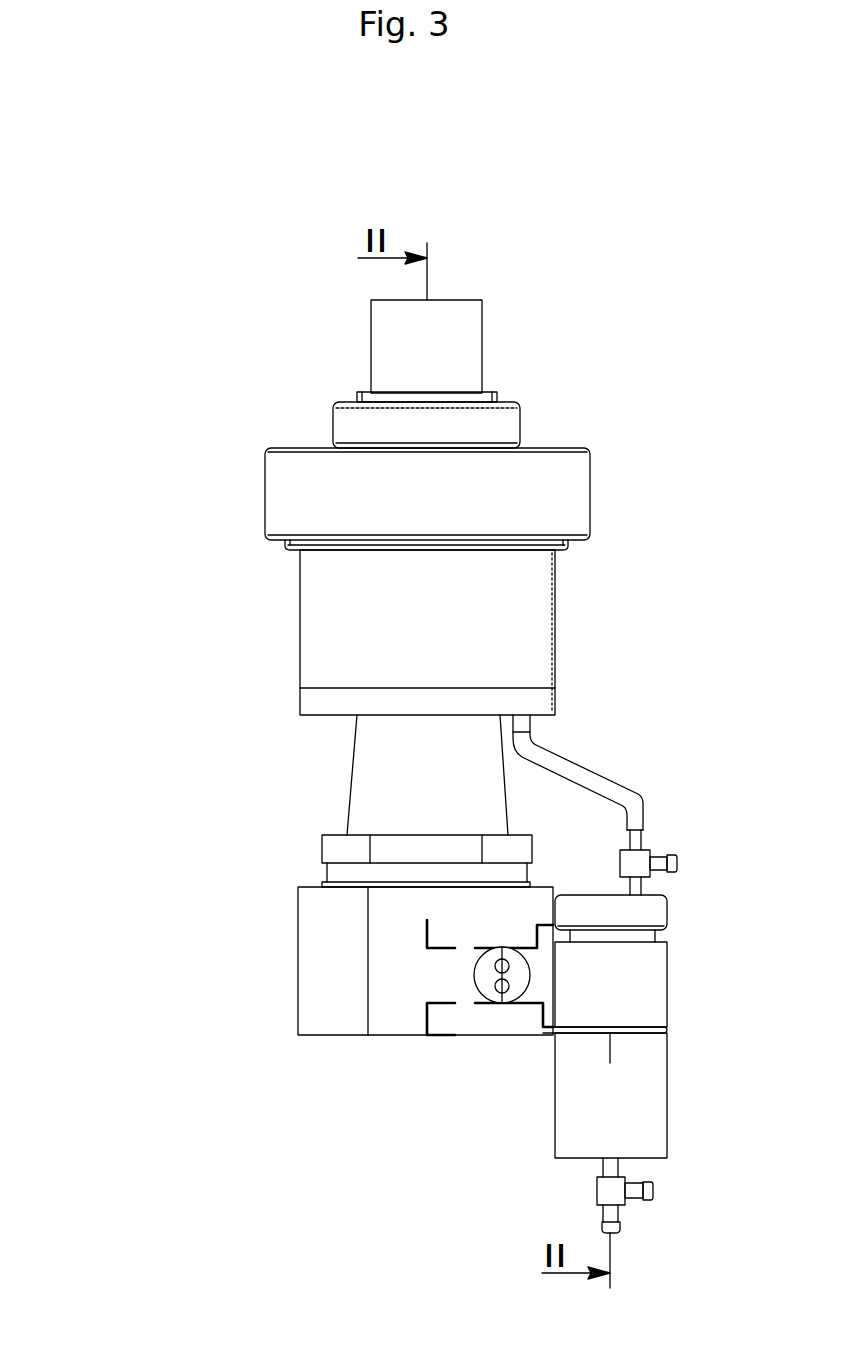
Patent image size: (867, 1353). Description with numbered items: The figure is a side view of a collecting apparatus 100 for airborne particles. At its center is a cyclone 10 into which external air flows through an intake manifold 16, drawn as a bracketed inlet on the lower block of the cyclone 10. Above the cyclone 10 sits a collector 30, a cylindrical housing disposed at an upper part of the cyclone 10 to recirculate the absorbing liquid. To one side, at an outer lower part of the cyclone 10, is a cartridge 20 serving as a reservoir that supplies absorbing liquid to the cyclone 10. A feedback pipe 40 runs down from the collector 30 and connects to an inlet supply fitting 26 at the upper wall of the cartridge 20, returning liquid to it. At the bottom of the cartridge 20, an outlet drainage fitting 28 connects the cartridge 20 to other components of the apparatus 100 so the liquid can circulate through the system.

The collecting apparatus 100 is at (80, 387).
The cyclone 10 is at (317, 857).
The intake manifold 16 is at (498, 1007).
The cartridge 20 is at (677, 980).
The inlet supply fitting 26 is at (652, 855).
The outlet drainage fitting 28 is at (633, 1197).
The collector 30 is at (558, 632).
The feedback pipe 40 is at (580, 772).